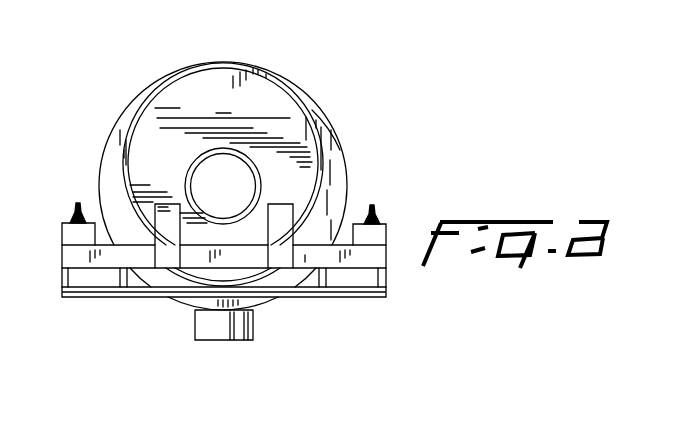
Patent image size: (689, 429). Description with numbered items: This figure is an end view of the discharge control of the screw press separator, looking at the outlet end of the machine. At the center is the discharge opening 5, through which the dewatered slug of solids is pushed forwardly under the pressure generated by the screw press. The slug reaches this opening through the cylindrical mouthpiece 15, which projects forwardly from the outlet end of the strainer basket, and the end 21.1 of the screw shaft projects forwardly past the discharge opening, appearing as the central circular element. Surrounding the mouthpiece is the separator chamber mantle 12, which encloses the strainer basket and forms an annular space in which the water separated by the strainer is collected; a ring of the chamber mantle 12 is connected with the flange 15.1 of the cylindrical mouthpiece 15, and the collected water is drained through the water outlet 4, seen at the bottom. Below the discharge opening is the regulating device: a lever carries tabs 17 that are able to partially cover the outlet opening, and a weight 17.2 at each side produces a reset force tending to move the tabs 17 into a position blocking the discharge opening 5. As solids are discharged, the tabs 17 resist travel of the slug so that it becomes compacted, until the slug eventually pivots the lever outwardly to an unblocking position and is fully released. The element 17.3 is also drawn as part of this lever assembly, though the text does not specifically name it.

The separator chamber mantle 12 is at (178, 69).
The cylindrical mouthpiece 15 is at (283, 102).
The flange of the cylindrical mouthpiece 15.1 is at (328, 132).
The discharge opening 5 is at (221, 157).
The end of the screw shaft 21.1 is at (187, 170).
The tabs 17 is at (165, 228).
The weight 17.2 is at (70, 217).
The base strips 17.3 is at (303, 300).
The water outlet 4 is at (225, 343).